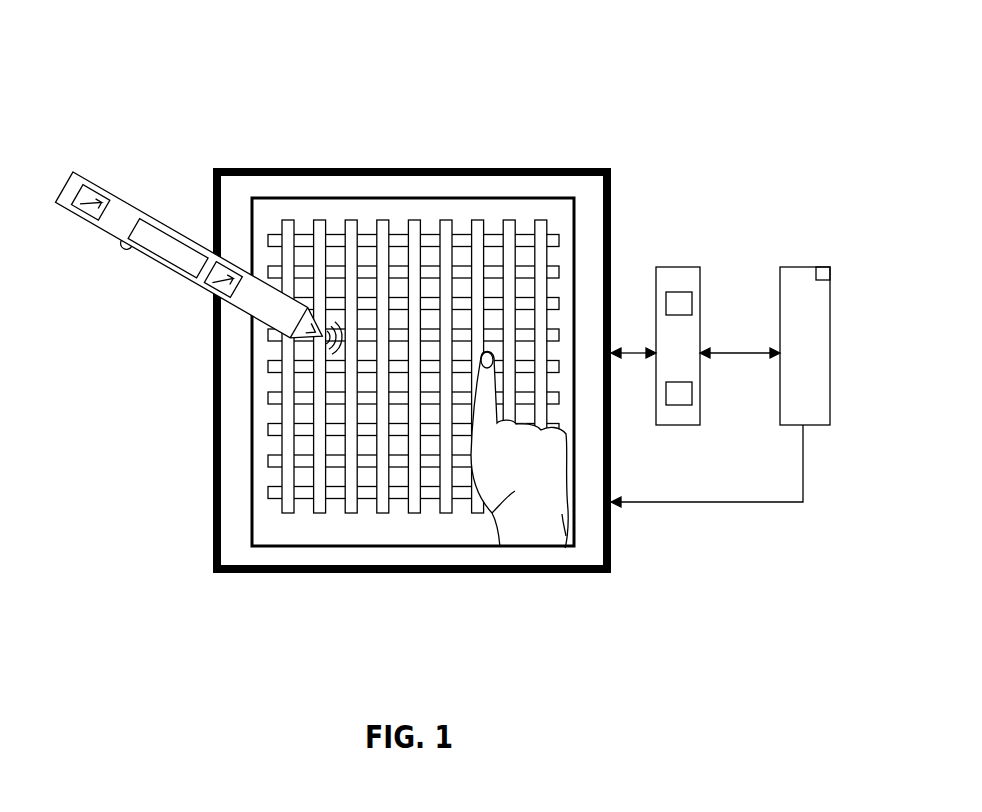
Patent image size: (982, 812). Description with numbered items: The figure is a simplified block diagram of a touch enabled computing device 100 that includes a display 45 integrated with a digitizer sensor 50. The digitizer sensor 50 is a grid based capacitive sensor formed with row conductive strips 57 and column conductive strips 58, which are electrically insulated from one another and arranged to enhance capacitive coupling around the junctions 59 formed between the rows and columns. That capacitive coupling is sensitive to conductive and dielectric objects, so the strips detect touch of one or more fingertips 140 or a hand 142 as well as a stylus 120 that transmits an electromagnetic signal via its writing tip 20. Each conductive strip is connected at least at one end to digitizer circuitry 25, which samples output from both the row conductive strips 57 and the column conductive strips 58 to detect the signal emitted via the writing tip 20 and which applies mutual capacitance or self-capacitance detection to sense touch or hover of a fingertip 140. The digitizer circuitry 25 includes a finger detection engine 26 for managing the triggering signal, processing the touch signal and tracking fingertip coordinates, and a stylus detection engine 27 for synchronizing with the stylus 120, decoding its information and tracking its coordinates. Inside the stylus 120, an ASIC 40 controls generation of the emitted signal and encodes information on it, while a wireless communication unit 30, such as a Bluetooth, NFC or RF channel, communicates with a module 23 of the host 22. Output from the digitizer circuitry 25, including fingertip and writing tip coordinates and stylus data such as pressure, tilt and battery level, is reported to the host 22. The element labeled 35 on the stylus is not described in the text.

The computing device 100 is at (410, 86).
The writing tip 20 is at (305, 340).
The host 22 is at (806, 267).
The module 23 is at (827, 280).
The digitizer circuitry 25 is at (215, 283).
The finger detection engine 26 is at (692, 303).
The stylus detection engine 27 is at (692, 398).
The wireless communication unit 30 is at (81, 212).
The stylus button 35 is at (122, 252).
The ASIC 40 is at (153, 258).
The display 45 is at (536, 168).
The digitizer sensor 50 is at (578, 245).
The row conductive strips 57 is at (262, 407).
The column conductive strips 58 is at (470, 220).
The junctions 59 is at (380, 458).
The stylus 120 is at (190, 239).
The fingertip 140 is at (462, 412).
The hand 142 is at (492, 513).